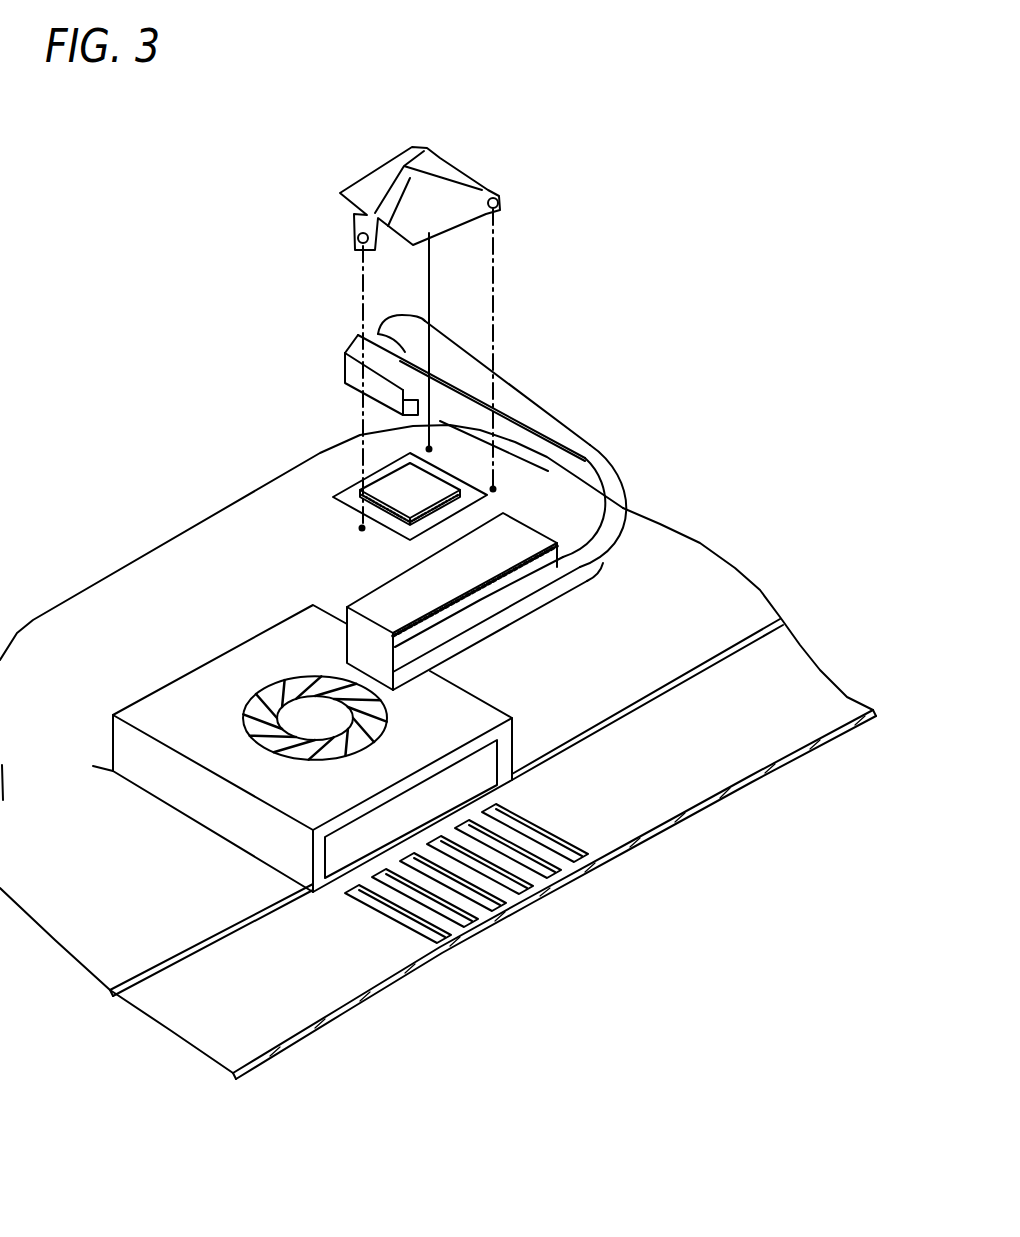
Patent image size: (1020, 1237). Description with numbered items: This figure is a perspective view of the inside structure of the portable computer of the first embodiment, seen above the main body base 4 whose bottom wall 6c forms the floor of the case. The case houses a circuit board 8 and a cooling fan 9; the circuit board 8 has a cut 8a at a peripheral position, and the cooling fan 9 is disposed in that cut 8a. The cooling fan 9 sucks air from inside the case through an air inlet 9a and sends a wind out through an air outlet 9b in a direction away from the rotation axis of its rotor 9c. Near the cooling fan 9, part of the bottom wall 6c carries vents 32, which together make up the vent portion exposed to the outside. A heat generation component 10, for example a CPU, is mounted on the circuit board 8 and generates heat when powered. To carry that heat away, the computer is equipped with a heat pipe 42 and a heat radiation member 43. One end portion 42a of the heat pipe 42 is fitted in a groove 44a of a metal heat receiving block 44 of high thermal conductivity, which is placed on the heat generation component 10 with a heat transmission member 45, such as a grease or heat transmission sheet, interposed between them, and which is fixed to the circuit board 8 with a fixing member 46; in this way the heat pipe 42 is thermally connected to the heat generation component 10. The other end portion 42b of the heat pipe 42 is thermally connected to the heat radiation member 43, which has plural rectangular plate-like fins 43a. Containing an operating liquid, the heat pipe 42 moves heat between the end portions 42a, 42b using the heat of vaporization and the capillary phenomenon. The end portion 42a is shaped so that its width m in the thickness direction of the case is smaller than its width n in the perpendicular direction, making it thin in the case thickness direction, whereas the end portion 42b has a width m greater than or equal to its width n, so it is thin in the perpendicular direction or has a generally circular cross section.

The main body base 4 is at (805, 696).
The bottom wall 6c is at (773, 750).
The circuit board 8 is at (702, 562).
The cut 8a is at (157, 803).
The cooling fan 9 is at (203, 690).
The air inlet 9a is at (388, 716).
The air outlet 9b is at (352, 830).
The rotor 9c is at (313, 713).
The heat generation component 10 is at (345, 478).
The vents 32 is at (547, 877).
The heat pipe 42 is at (526, 505).
The one end portion 42a is at (477, 352).
The other end portion 42b is at (585, 582).
The heat radiation member 43 is at (383, 606).
The fins 43a is at (500, 587).
The heat receiving block 44 is at (345, 356).
The groove 44a is at (372, 318).
The heat transmission member 45 is at (436, 490).
The fixing member 46 is at (440, 181).
The width in the thickness direction of the case m is at (470, 360).
The width in the direction perpendicular to the thickness direction n is at (509, 427).